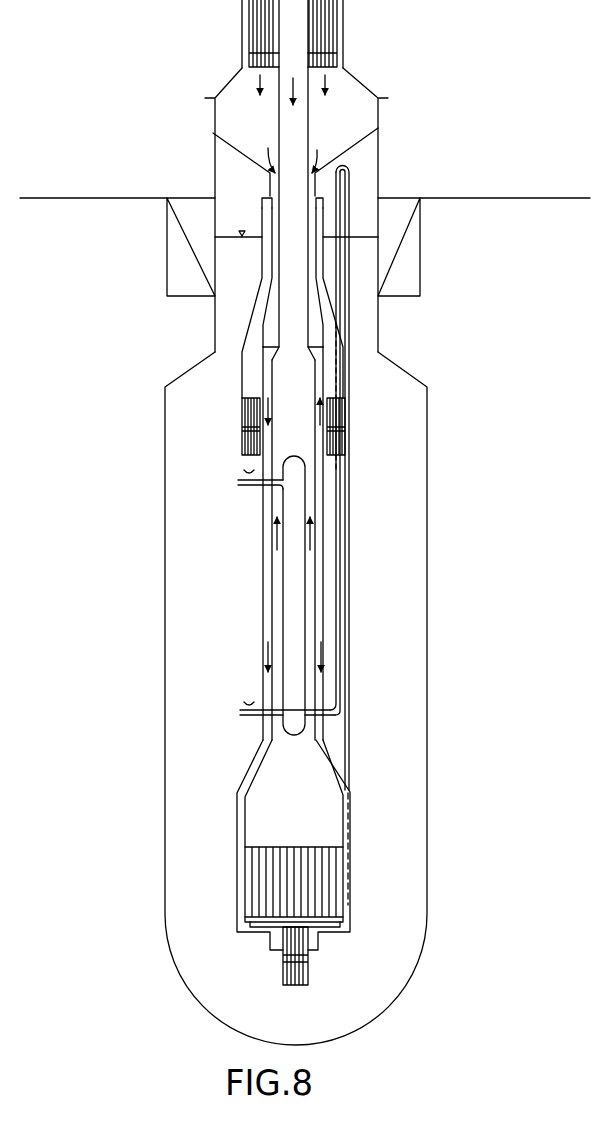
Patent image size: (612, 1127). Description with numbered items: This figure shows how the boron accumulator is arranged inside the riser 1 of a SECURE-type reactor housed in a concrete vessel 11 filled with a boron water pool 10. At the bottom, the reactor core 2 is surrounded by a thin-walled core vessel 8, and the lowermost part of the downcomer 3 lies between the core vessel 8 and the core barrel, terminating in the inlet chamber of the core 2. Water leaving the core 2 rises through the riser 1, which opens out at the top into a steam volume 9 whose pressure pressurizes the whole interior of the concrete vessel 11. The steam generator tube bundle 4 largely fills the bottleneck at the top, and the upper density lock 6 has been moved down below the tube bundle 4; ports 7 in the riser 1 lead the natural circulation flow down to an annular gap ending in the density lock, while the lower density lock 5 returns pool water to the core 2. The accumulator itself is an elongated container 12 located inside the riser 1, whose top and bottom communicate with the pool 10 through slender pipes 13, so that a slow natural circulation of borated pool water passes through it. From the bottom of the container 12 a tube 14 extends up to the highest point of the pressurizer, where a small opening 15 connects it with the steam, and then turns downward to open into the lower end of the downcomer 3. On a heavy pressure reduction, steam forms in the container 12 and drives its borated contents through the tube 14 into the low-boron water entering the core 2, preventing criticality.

The riser 1 is at (305, 430).
The reactor core 2 is at (323, 870).
The downcomer 3 is at (347, 95).
The steam generator tube bundle 4 is at (326, 23).
The lower density lock 5 is at (302, 973).
The upper density lock 6 is at (252, 415).
The ports 7 is at (268, 357).
The core vessel 8 is at (262, 588).
The steam volume 9 is at (227, 168).
The boron water pool 10 is at (412, 512).
The concrete vessel 11 is at (486, 591).
The boron accumulator container 12 is at (297, 573).
The slender pipes 13 is at (248, 490).
The tube 14 is at (342, 605).
The small opening 15 is at (350, 173).